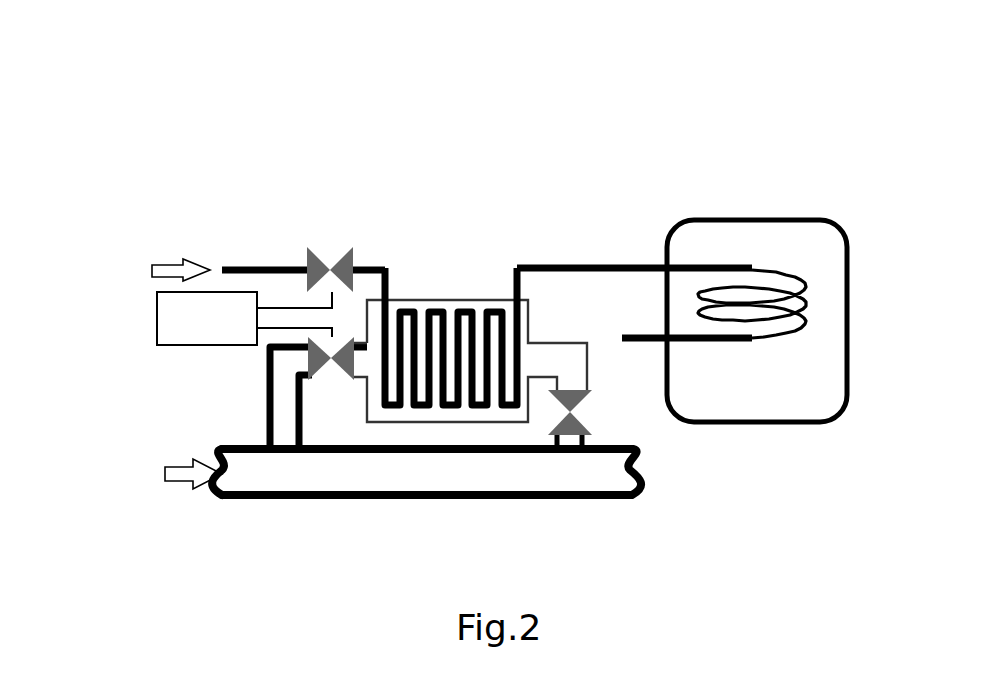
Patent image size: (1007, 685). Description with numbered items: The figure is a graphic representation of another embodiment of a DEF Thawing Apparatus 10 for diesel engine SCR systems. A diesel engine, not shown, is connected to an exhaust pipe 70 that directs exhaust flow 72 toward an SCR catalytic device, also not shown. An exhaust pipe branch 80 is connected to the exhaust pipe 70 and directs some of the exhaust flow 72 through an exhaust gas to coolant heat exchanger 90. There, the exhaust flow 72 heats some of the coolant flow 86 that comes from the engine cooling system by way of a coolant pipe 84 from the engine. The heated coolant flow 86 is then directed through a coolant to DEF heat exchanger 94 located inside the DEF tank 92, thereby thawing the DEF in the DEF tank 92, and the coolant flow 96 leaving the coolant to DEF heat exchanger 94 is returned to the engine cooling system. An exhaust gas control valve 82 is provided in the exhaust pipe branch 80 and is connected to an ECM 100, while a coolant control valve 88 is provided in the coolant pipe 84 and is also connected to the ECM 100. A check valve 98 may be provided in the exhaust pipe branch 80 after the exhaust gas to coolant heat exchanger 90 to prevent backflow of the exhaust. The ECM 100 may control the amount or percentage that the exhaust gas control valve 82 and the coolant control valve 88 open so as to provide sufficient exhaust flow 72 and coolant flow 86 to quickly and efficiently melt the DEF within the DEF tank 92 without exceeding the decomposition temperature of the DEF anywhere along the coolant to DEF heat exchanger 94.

The DEF Thawing Apparatus 10 is at (430, 126).
The exhaust pipe 70 is at (543, 499).
The exhaust flow 72 is at (193, 490).
The exhaust pipe branch 80 is at (268, 399).
The exhaust gas control valve 82 is at (333, 364).
The coolant pipe 84 is at (247, 263).
The coolant flow 86 is at (167, 263).
The coolant control valve 88 is at (335, 275).
The exhaust gas to coolant heat exchanger 90 is at (430, 298).
The DEF tank 92 is at (747, 219).
The coolant to DEF heat exchanger 94 is at (803, 299).
The coolant flow 96 is at (639, 338).
The check valve 98 is at (578, 409).
The ECM 100 is at (157, 313).